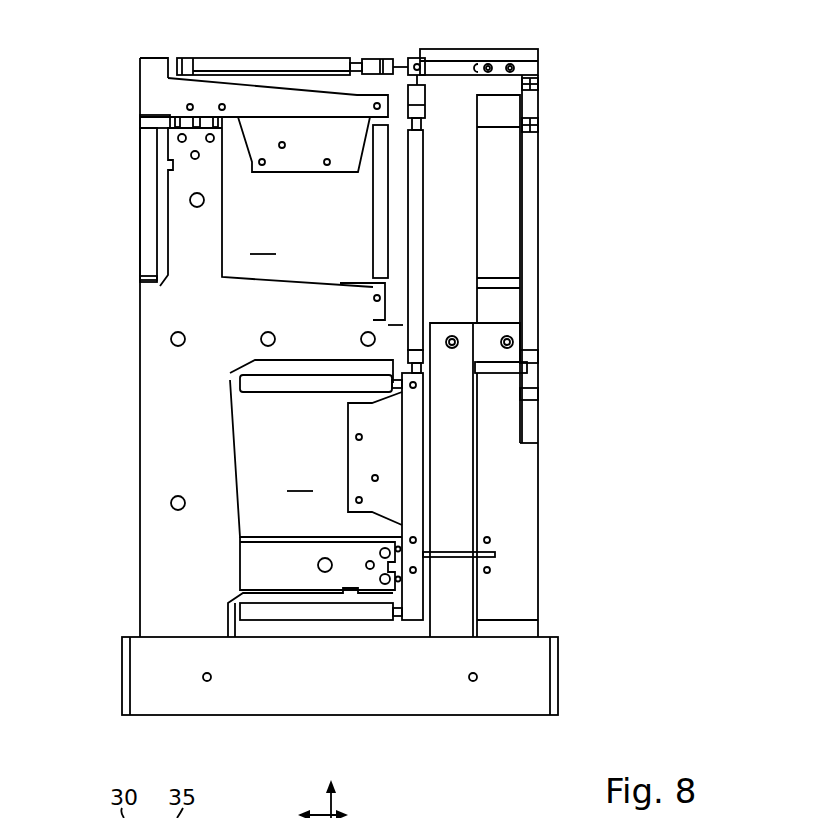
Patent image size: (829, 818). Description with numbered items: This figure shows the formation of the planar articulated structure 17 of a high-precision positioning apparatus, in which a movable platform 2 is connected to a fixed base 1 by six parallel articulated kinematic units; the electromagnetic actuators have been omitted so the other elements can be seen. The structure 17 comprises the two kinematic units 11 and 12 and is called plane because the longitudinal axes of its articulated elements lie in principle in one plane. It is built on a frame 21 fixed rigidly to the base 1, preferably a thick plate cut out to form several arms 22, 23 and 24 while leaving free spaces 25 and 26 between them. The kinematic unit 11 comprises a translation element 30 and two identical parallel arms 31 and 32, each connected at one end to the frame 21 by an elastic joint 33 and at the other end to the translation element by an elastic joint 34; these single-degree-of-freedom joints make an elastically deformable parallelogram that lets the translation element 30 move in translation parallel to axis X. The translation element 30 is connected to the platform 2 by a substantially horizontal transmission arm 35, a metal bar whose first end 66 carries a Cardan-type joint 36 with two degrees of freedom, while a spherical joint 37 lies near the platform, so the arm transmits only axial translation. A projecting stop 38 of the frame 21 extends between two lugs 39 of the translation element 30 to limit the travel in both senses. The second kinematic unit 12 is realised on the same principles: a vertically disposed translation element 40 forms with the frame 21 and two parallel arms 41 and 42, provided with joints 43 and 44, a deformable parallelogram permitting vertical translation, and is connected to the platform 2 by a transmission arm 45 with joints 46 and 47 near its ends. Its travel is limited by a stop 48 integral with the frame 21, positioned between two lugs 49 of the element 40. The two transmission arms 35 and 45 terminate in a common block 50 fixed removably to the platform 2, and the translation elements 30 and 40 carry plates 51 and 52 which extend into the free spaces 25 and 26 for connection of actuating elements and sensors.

The fixed base 1 is at (145, 673).
The movable platform 2 is at (482, 50).
The kinematic unit 11 is at (122, 125).
The kinematic unit 12 is at (330, 455).
The planar articulated structure 17 is at (122, 462).
The frame 21 is at (158, 496).
The arm 22 is at (200, 227).
The arm 23 is at (310, 297).
The arm 24 is at (305, 552).
The free space 25 is at (297, 202).
The free space 26 is at (316, 458).
The translation element 30 is at (258, 97).
The arm 31 is at (145, 213).
The arm 32 is at (373, 212).
The elastic joint 33 is at (143, 283).
The elastic joint 34 is at (372, 115).
The transmission arm 35 is at (287, 62).
The joint 36 is at (180, 48).
The joint 37 is at (382, 48).
The projecting stop 38 is at (198, 132).
The lugs 39 is at (215, 112).
The translation element 40 is at (418, 425).
The arm 41 is at (300, 612).
The arm 42 is at (258, 378).
The joint 43 is at (233, 387).
The joint 44 is at (398, 614).
The transmission arm 45 is at (415, 243).
The joint 46 is at (395, 355).
The joint 47 is at (437, 98).
The stop 48 is at (400, 565).
The lugs 49 is at (400, 550).
The common block 50 is at (415, 60).
The plate 51 is at (284, 172).
The plate 52 is at (367, 482).
The first end 66 is at (152, 62).